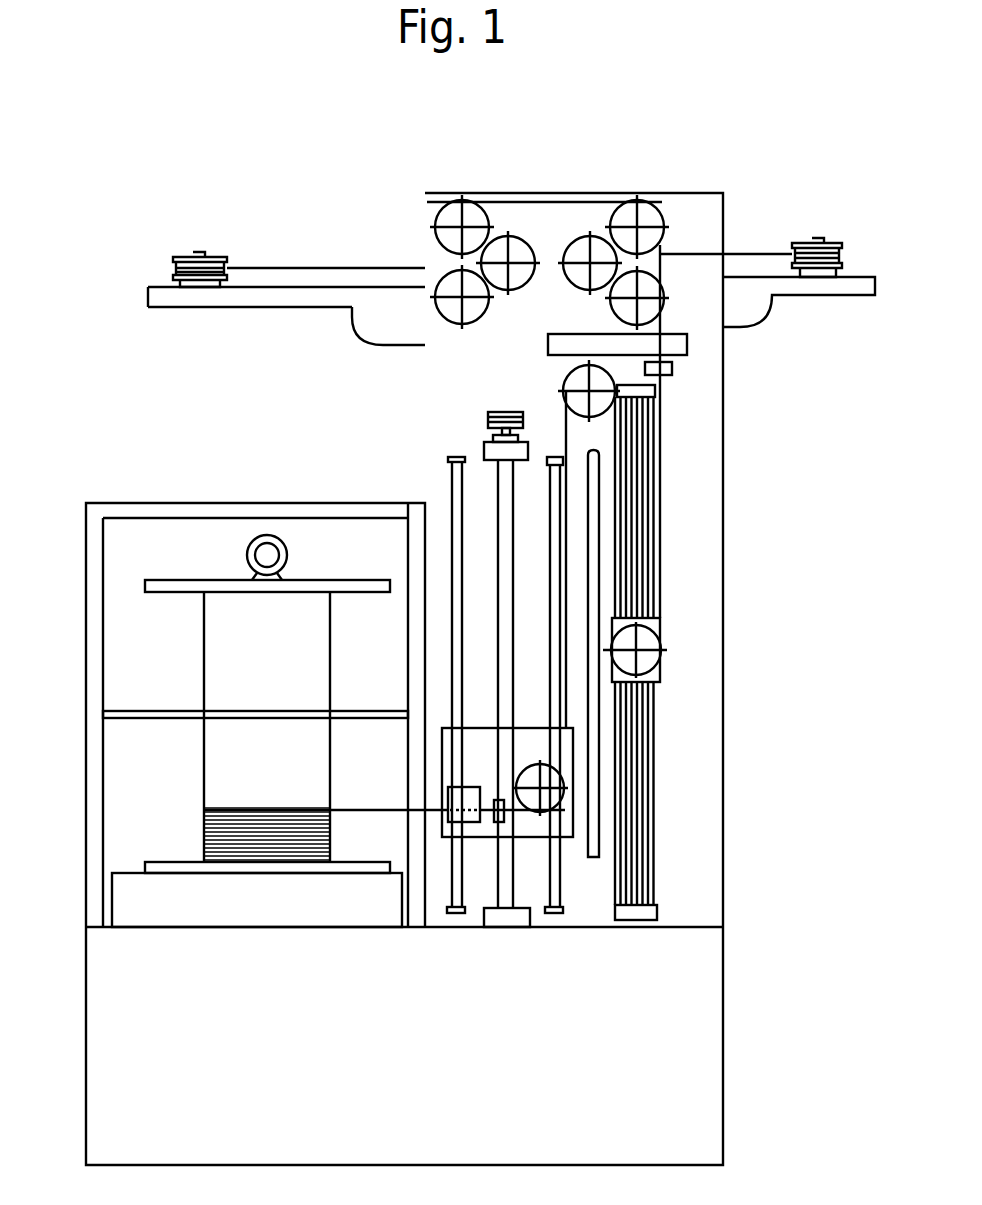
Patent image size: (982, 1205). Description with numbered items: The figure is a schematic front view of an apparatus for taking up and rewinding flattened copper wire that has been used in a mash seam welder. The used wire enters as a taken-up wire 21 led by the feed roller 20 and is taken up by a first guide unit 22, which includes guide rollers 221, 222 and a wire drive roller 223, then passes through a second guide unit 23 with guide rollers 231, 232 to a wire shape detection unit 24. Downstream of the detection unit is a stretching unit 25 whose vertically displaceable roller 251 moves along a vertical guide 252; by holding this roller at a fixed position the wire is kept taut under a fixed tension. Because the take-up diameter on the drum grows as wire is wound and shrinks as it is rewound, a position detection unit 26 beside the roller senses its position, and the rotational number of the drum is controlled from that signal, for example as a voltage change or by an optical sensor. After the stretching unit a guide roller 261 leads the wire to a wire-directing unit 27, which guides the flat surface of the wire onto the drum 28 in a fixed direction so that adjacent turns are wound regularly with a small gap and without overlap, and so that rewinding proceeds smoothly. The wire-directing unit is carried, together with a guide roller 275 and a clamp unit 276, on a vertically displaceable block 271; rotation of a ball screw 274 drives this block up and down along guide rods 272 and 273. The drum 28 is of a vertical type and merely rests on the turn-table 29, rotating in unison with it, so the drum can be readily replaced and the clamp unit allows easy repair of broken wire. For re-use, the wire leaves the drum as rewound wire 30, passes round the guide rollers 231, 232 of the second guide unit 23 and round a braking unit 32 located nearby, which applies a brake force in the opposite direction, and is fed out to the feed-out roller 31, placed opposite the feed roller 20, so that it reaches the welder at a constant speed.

The feed roller 20 is at (185, 256).
The taken-up wire 21 is at (277, 267).
The first guide unit 22 is at (449, 222).
The guide roller 221 is at (453, 208).
The guide roller 222 is at (447, 273).
The wire drive roller 223 is at (513, 237).
The braking unit 32 is at (575, 243).
The second guide unit 23 is at (606, 252).
The guide roller 231 is at (642, 207).
The guide roller 232 is at (650, 307).
The rewound wire 30 is at (745, 252).
The feed-out roller 31 is at (825, 240).
The wire shape detection unit 24 is at (672, 368).
The guide roller 261 is at (612, 400).
The position detection unit 26 is at (597, 508).
The stretching unit 25 is at (693, 645).
The vertically displaceable roller 251 is at (657, 660).
The vertical guide 252 is at (635, 723).
The wire-directing unit 27 is at (572, 803).
The vertically displaceable block 271 is at (568, 812).
The guide rod 272 is at (455, 510).
The guide rod 273 is at (552, 507).
The ball screw 274 is at (497, 471).
The guide roller 275 is at (558, 782).
The clamp unit 276 is at (497, 798).
The drum 28 is at (215, 637).
The turn-table 29 is at (120, 900).